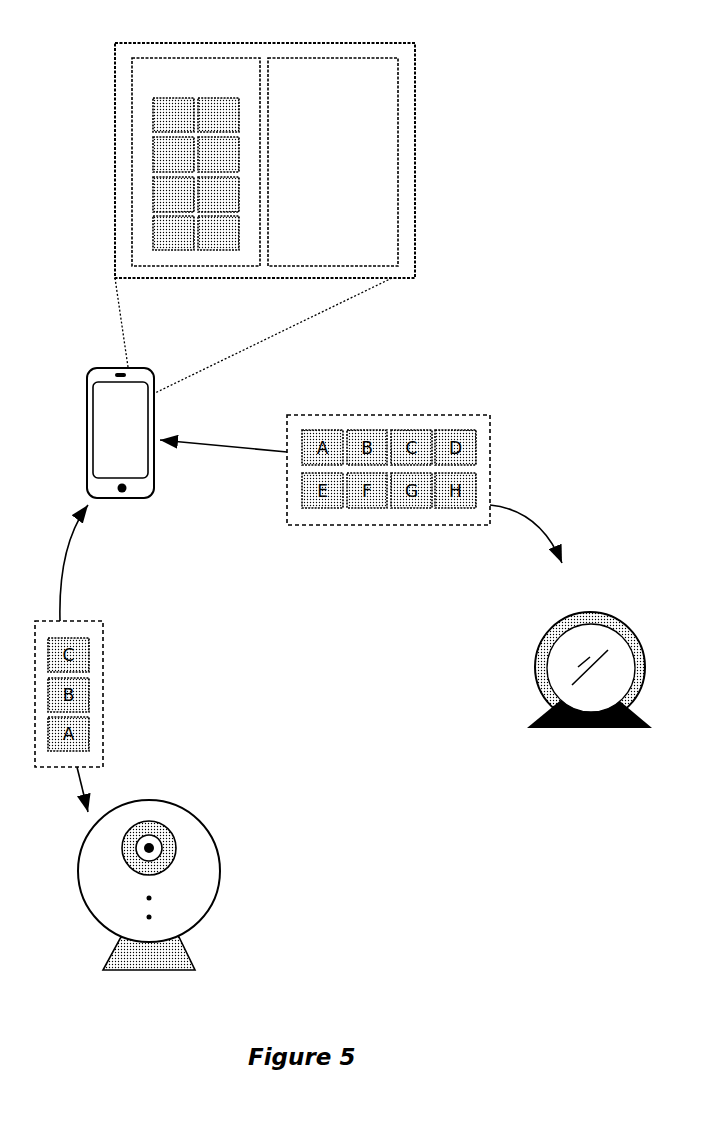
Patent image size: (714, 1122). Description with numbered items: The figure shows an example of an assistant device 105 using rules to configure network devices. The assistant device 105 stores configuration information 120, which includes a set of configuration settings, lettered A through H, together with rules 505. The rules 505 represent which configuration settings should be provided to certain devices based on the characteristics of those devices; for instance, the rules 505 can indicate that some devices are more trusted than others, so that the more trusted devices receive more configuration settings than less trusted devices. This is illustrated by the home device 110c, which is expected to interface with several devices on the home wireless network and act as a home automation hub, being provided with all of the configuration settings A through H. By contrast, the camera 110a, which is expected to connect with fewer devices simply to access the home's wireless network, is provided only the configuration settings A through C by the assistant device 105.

The configuration information 120 is at (265, 140).
The rules 505 is at (333, 162).
The assistant device 105 is at (112, 368).
The camera 110a is at (127, 803).
The home device 110c is at (587, 613).